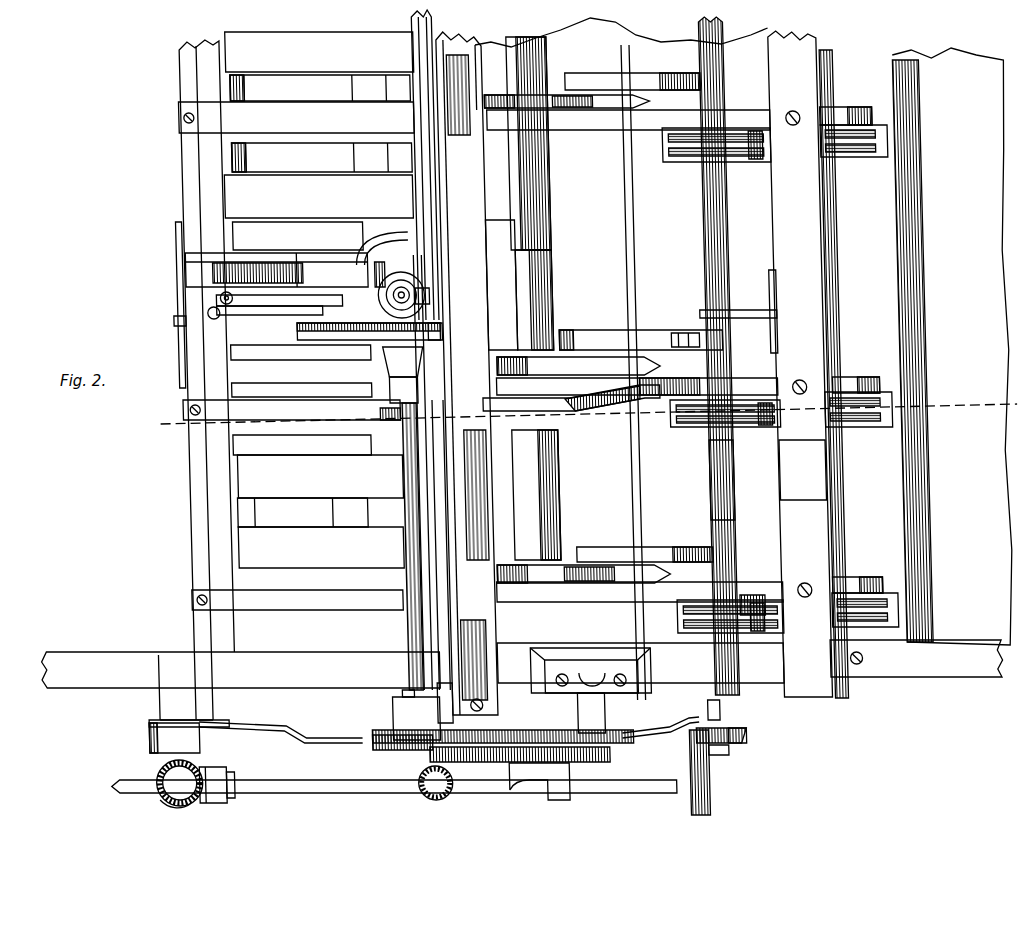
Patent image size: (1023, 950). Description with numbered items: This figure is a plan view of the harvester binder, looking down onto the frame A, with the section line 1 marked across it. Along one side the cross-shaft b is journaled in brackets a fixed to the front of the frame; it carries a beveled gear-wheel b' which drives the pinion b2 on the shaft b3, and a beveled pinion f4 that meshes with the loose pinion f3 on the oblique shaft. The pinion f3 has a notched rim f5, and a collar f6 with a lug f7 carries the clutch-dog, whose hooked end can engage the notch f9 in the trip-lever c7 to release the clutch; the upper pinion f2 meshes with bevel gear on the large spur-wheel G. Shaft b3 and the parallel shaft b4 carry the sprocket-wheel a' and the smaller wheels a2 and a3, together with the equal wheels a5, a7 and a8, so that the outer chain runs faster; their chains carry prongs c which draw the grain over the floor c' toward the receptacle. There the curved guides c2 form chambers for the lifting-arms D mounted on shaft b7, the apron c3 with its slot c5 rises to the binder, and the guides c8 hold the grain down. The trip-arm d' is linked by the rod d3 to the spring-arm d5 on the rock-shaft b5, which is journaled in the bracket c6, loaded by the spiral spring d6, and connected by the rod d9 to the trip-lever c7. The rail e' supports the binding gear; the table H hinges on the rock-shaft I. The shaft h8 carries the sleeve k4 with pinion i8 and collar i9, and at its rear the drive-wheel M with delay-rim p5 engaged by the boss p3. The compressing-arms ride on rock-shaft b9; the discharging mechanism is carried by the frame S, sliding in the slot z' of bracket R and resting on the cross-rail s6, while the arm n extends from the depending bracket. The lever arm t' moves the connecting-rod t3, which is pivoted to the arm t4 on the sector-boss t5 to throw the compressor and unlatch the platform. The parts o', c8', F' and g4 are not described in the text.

The frame A is at (200, 563).
The binding platform or table H is at (324, 300).
The rock-shaft I is at (400, 168).
The guides c8 is at (531, 363).
The lifting-arms D is at (565, 95).
The curved guides c2 is at (668, 90).
The rigid apron c3 is at (525, 143).
The elongated transverse slot c5 is at (534, 300).
The shaft b7 is at (508, 270).
The prongs or teeth c is at (459, 377).
The floor or reaper-platform c' is at (699, 364).
The horizontal rail e' is at (803, 470).
The shaft b4 is at (840, 510).
The shaft b3 is at (732, 240).
The rock-shaft b5 is at (718, 478).
The brackets a is at (705, 162).
The spiral spring d6 is at (748, 426).
The sprocket-wheel a3 is at (737, 596).
The spring-pressed trip-arm d' is at (641, 327).
The sprocket-wheel a2 is at (684, 335).
The laterally-extending bracket c6 is at (738, 311).
The bent rod c8' is at (572, 411).
The section line 1 is at (583, 414).
The rectangular frame S is at (326, 254).
The cross-rail s6 is at (228, 264).
The lower lever arm t' is at (279, 292).
The connecting-rod t3 is at (266, 314).
The sector-shaped boss t5 is at (236, 298).
The laterally-extending arm t4 is at (215, 319).
The oblong closed slot z' is at (167, 305).
The supporting-bracket R is at (176, 321).
The large drive-wheel M is at (300, 336).
The wheel o' is at (406, 289).
The boss p3 is at (433, 298).
The delay-rim p5 is at (445, 333).
The outwardly-extending arm n is at (382, 338).
The shaft h8 is at (402, 540).
The horizontal rock-shaft b9 is at (444, 622).
The large spur-wheel G is at (527, 730).
The rack F' is at (532, 753).
The pinion i8 is at (365, 745).
The sleeve k4 is at (385, 720).
The collar i9 is at (395, 694).
The cross-shaft b is at (394, 770).
The pinion f3 is at (162, 800).
The rim f5 is at (172, 808).
The pinion f4 is at (214, 770).
The collar f6 is at (221, 798).
The lug f7 is at (174, 738).
The notch f9 is at (148, 735).
The trip-lever c7 is at (205, 722).
The connecting-rod d9 is at (300, 732).
The pinion f2 is at (446, 796).
The bracket g4 is at (524, 798).
The beveled gear-wheel b' is at (689, 774).
The connecting-rod d3 is at (740, 730).
The pinion b2 is at (740, 736).
The sprocket-wheel a5 is at (720, 750).
The sprocket-wheel a' is at (712, 701).
The depending spring-arm d5 is at (858, 180).
The sprocket-wheel a7 is at (862, 452).
The sprocket-wheel a8 is at (924, 576).